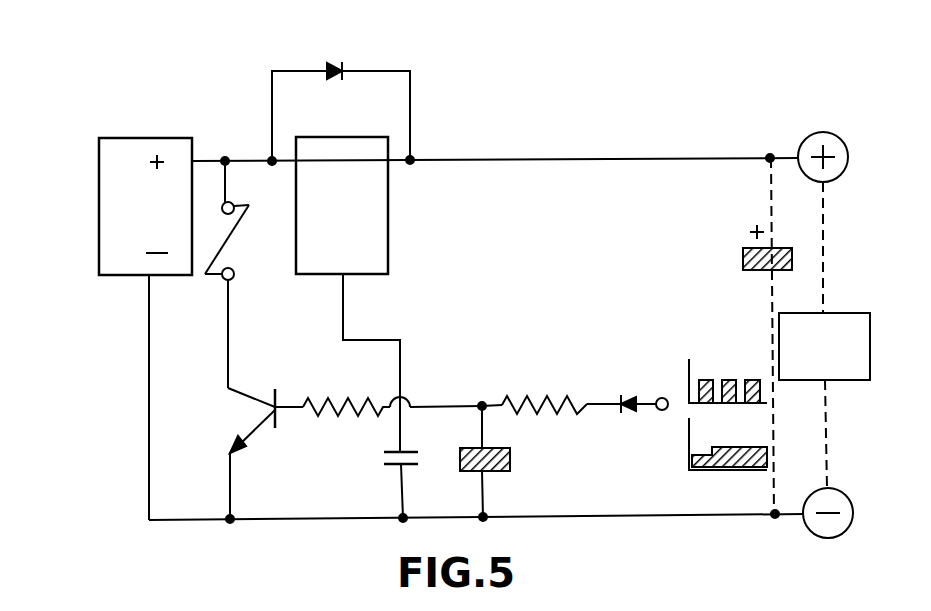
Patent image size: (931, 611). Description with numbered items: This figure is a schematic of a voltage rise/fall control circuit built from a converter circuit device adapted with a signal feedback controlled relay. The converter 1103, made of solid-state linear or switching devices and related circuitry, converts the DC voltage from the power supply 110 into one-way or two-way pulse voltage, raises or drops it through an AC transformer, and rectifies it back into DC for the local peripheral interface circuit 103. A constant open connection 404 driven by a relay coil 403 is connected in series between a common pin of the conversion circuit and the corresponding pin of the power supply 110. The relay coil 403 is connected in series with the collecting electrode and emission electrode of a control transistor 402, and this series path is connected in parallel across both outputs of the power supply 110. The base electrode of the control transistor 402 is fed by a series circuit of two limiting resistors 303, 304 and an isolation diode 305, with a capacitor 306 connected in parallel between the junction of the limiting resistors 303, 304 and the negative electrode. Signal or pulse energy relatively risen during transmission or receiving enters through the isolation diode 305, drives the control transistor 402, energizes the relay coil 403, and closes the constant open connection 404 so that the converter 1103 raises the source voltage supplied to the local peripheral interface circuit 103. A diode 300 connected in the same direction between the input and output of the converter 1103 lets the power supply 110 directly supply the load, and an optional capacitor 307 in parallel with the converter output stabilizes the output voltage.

The power supply 110 is at (111, 136).
The diode 300 is at (329, 62).
The relay coil 403 is at (240, 225).
The converter 1103 is at (389, 207).
The control transistor 402 is at (253, 408).
The limiting resistor 303 is at (340, 380).
The constant open connection 404 is at (379, 454).
The capacitor 306 is at (511, 456).
The limiting resistor 304 is at (530, 399).
The isolation diode 305 is at (629, 397).
The capacitor 307 is at (740, 265).
The local peripheral interface circuit 103 is at (808, 383).